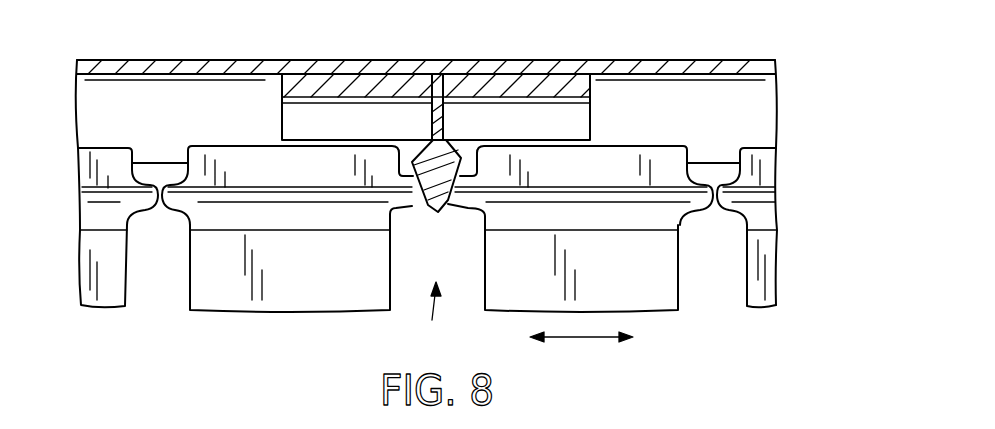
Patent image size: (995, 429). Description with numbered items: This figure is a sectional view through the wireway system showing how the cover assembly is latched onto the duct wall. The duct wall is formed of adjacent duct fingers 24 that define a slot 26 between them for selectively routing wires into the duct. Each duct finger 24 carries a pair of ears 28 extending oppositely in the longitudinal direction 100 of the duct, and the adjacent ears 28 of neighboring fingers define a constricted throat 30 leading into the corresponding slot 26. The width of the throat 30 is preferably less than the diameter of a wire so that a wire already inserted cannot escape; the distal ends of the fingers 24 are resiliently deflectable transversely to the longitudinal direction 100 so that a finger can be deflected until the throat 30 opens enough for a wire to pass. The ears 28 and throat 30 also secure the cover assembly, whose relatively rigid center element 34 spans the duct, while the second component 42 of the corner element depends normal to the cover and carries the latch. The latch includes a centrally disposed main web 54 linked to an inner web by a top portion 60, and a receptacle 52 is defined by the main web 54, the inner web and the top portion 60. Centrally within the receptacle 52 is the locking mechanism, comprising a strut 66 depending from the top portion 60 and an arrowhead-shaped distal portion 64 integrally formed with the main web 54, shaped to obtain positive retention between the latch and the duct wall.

The duct finger 24 is at (292, 292).
The slot 26 is at (432, 317).
The ear 28 is at (162, 215).
The constricted throat 30 is at (714, 220).
The center element 34 is at (742, 65).
The second component 42 is at (742, 113).
The receptacle 52 is at (558, 124).
The main web 54 is at (295, 118).
The top portion 60 is at (513, 85).
The arrowhead-shaped distal portion 64 is at (443, 218).
The strut 66 is at (440, 126).
The longitudinal direction 100 is at (581, 352).